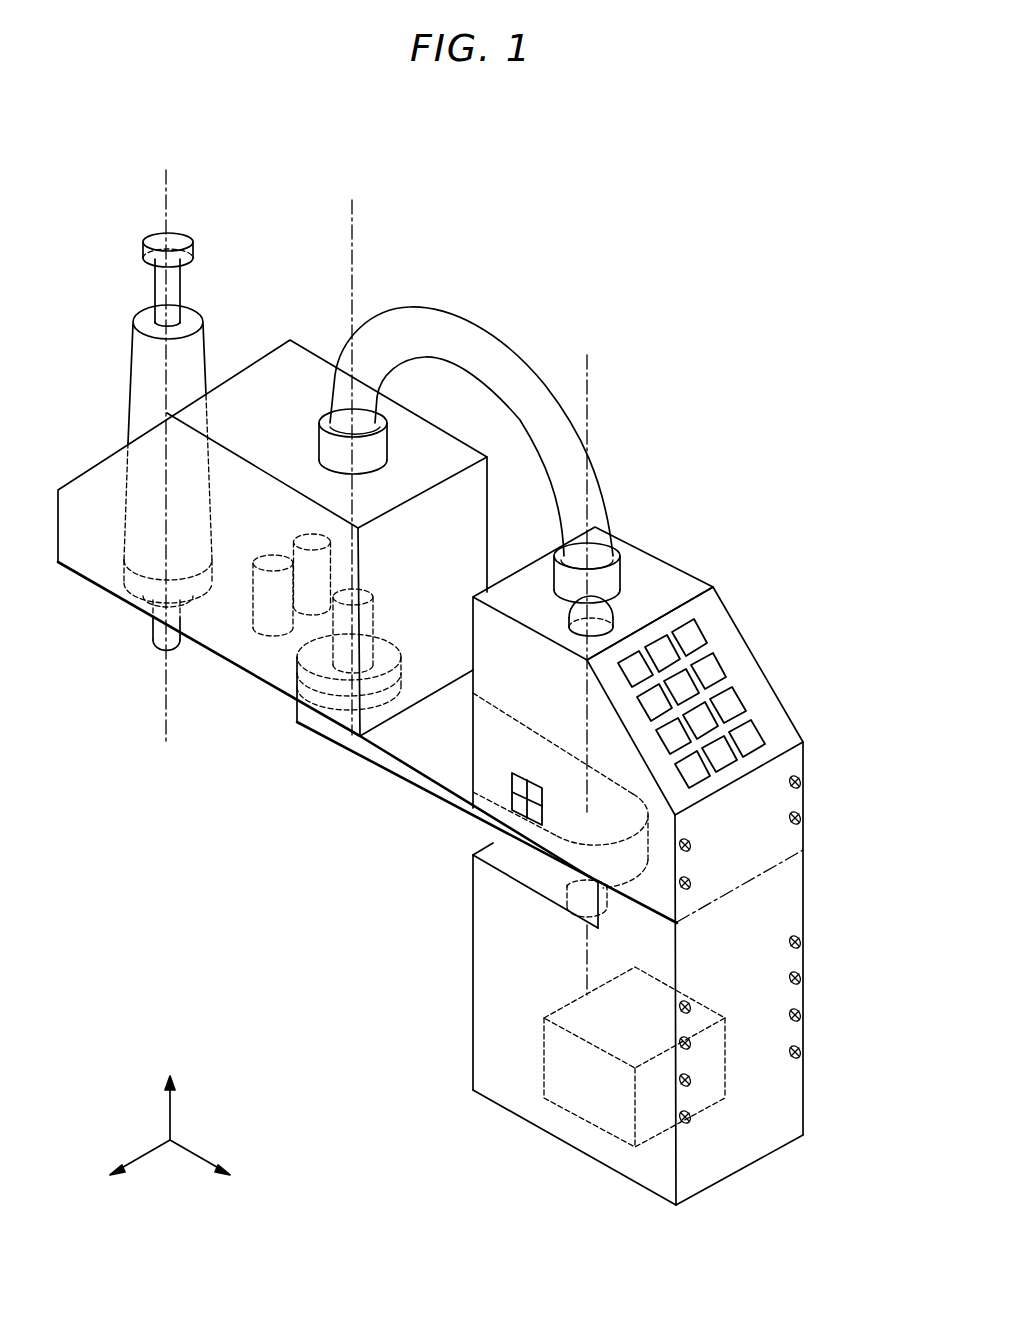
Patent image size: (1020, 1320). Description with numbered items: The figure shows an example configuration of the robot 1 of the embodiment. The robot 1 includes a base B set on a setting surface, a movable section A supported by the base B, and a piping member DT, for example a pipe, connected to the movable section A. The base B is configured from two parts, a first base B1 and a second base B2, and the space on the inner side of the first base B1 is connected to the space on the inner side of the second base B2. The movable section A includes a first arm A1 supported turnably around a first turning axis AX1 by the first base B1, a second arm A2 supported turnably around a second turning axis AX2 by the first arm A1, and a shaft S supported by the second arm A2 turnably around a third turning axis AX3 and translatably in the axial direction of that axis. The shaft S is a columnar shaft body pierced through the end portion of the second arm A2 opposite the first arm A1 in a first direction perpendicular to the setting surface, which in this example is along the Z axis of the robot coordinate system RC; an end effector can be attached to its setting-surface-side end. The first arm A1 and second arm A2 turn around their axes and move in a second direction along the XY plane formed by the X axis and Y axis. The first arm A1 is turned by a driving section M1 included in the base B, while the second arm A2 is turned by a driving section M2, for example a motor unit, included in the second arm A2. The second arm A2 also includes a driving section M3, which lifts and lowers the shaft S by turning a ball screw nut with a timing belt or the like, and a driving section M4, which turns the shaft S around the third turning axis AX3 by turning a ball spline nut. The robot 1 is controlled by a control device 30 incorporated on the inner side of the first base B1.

The robot 1 is at (215, 193).
The movable section A is at (308, 782).
The first arm A1 is at (400, 772).
The second arm A2 is at (262, 683).
The base B is at (832, 892).
The first base B1 is at (800, 1016).
The second base B2 is at (800, 786).
The shaft S is at (155, 293).
The piping member DT is at (480, 322).
The driving section M1 is at (566, 893).
The driving section M2 is at (346, 660).
The driving section M3 is at (325, 567).
The driving section M4 is at (253, 616).
The first turning axis AX1 is at (590, 378).
The second turning axis AX2 is at (350, 218).
The third turning axis AX3 is at (163, 190).
The control device 30 is at (726, 1087).
The robot coordinate system RC is at (190, 1128).
The X axis X is at (99, 1184).
The Y axis Y is at (240, 1184).
The Z axis Z is at (171, 1062).